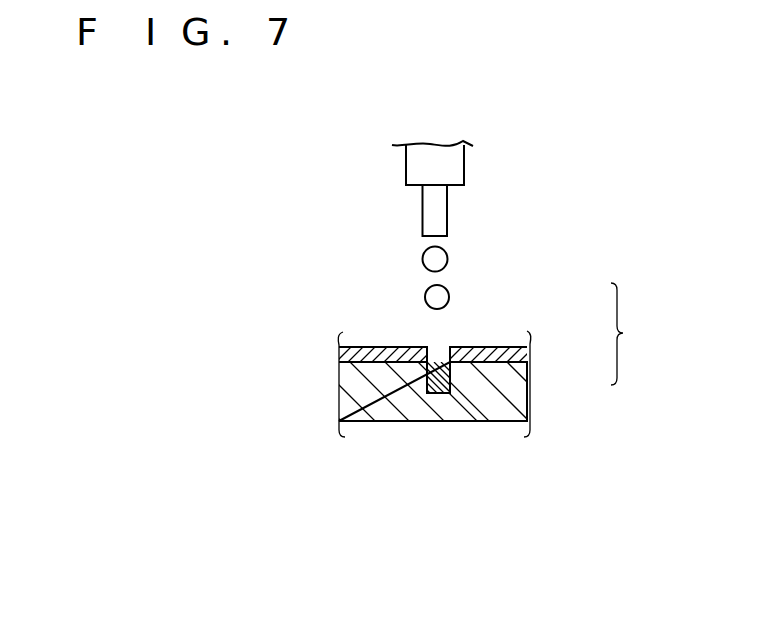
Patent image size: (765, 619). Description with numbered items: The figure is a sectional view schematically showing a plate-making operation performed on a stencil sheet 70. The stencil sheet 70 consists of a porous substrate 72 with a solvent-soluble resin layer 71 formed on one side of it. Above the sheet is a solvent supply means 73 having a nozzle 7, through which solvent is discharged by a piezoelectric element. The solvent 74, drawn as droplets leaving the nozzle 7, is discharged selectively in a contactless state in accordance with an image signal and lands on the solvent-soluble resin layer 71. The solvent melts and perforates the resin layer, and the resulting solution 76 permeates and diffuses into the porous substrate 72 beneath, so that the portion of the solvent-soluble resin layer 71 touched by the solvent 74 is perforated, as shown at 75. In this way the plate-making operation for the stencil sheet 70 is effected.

The nozzle 7 is at (423, 188).
The solvent supply means 73 is at (406, 165).
The solvent 74 is at (425, 298).
The stencil sheet 70 is at (472, 394).
The solvent-soluble resin layer 71 is at (502, 346).
The porous substrate 72 is at (522, 390).
The perforated portion 75 is at (438, 358).
The solution 76 is at (448, 395).